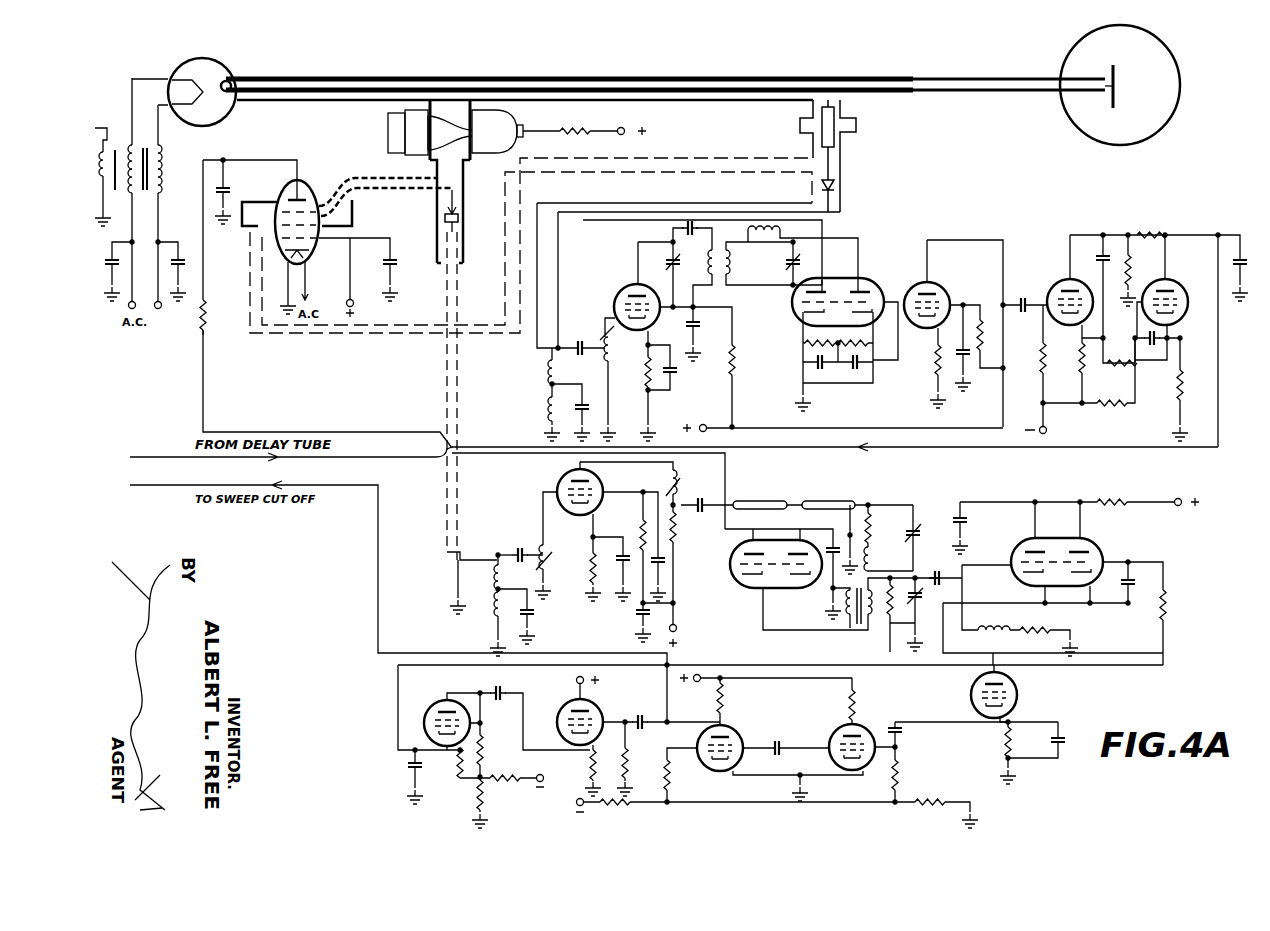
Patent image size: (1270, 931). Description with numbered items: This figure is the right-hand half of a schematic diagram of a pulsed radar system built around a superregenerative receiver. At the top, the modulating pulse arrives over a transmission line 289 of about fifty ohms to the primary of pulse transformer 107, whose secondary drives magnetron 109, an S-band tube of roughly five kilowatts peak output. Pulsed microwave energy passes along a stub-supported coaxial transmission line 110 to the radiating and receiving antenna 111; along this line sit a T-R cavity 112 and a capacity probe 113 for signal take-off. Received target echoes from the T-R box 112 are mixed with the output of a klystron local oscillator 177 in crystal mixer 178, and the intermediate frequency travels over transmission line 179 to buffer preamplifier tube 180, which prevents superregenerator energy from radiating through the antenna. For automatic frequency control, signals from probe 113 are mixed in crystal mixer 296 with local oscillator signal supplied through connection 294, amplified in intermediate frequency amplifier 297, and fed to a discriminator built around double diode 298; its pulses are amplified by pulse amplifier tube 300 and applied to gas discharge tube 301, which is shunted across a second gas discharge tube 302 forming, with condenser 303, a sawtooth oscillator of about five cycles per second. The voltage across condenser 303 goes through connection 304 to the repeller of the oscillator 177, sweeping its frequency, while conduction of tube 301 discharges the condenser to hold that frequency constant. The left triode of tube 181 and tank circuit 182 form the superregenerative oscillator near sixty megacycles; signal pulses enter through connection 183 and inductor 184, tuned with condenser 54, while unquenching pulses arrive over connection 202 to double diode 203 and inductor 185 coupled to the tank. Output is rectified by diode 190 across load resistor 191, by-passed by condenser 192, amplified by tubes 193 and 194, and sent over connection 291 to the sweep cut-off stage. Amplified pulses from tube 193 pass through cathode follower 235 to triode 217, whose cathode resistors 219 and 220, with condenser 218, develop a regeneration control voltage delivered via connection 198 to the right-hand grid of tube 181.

The magnetron 109 is at (236, 64).
The coaxial transmission line 110 is at (625, 78).
The antenna 111 is at (1177, 75).
The T-R cavity 112 is at (388, 132).
The capacity probe 113 is at (840, 140).
The pulse transformer 107 is at (163, 166).
The transmission line 289 is at (100, 128).
The local oscillator 177 is at (280, 194).
The crystal mixer 178 is at (459, 219).
The transmission line 179 is at (463, 402).
The connection 294 is at (704, 160).
The crystal mixer 296 is at (836, 190).
The intermediate frequency amplifier 297 is at (618, 292).
The double diode 298 is at (878, 284).
The pulse amplifier tube 300 is at (942, 286).
The gas discharge tube 301 is at (1064, 282).
The gas discharge tube 302 is at (1180, 284).
The condenser 303 is at (1243, 250).
The connection 304 is at (906, 448).
The connection 202 is at (138, 457).
The connection 291 is at (138, 485).
The buffer preamplifier tube 180 is at (556, 480).
The connection 183 is at (795, 502).
The inductor 184 is at (873, 553).
The condenser 54 is at (922, 528).
The double diode 203 is at (741, 580).
The tube 181 is at (1045, 541).
The inductor 185 is at (848, 612).
The tank circuit 182 is at (888, 608).
The connection 198 is at (678, 662).
The triode 217 is at (428, 714).
The condenser 218 is at (408, 769).
The resistor 219 is at (456, 766).
The resistor 220 is at (484, 792).
The cathode follower tube 235 is at (601, 710).
The pulse amplifier tube 193 is at (728, 727).
The pulse amplifier tube 194 is at (860, 724).
The diode rectifier tube 190 is at (1016, 690).
The load resistor 191 is at (1003, 742).
The condenser 192 is at (1066, 744).